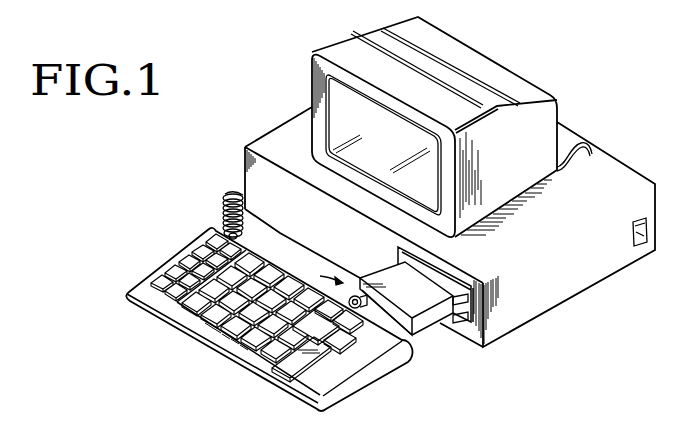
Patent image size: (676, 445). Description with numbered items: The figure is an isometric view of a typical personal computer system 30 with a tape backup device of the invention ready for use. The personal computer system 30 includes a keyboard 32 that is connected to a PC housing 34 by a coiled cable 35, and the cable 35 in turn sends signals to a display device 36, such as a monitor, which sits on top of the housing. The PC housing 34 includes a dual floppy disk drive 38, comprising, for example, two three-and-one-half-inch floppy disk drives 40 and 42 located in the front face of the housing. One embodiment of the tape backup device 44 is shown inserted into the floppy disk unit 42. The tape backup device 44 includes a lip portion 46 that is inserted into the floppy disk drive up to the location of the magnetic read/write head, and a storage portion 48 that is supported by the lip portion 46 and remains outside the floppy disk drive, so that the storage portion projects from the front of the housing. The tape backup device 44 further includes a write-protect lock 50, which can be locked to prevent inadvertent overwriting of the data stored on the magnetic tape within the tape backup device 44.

The personal computer system 30 is at (582, 314).
The keyboard 32 is at (396, 357).
The PC housing 34 is at (275, 126).
The coiled cable 35 is at (226, 212).
The display device 36 is at (313, 50).
The dual floppy disk drive 38 is at (406, 261).
The floppy disk drive 40 is at (457, 324).
The floppy disk drive 42 is at (433, 266).
The tape backup device 44 is at (318, 275).
The lip portion 46 is at (474, 343).
The storage portion 48 is at (433, 327).
The write-protect lock 50 is at (366, 308).